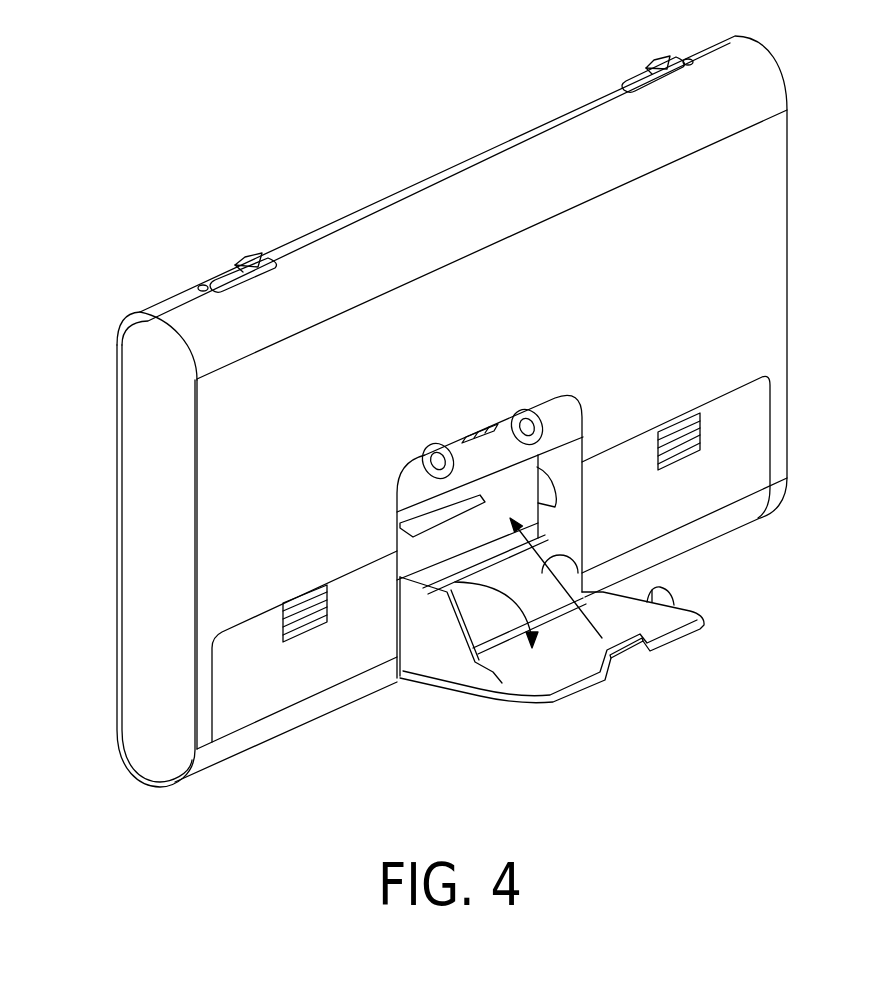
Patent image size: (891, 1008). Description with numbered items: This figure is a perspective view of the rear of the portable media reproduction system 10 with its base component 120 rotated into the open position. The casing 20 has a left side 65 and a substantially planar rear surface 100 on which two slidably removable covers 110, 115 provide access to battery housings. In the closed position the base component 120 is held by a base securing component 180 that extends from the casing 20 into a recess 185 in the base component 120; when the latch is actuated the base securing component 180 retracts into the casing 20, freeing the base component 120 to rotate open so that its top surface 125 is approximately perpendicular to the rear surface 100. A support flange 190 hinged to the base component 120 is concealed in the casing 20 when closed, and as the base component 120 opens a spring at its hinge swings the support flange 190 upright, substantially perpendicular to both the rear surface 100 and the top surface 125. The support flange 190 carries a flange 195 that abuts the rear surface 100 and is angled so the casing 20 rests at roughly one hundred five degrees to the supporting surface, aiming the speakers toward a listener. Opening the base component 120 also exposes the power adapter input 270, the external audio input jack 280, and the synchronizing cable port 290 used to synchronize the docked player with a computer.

The portable media reproduction system 10 is at (328, 149).
The casing 20 is at (301, 262).
The left side 65 is at (138, 584).
The rear surface 100 is at (766, 222).
The slidably removable cover 110 is at (244, 710).
The slidably removable cover 115 is at (697, 500).
The base component 120 is at (553, 678).
The top surface of base component 125 is at (668, 622).
The base securing component 180 is at (487, 430).
The recess 185 is at (633, 658).
The support flange 190 is at (440, 657).
The flange 195 is at (400, 613).
The power adapter input 270 is at (426, 462).
The external audio input jack 280 is at (550, 417).
The synchronizing cable port 290 is at (408, 530).